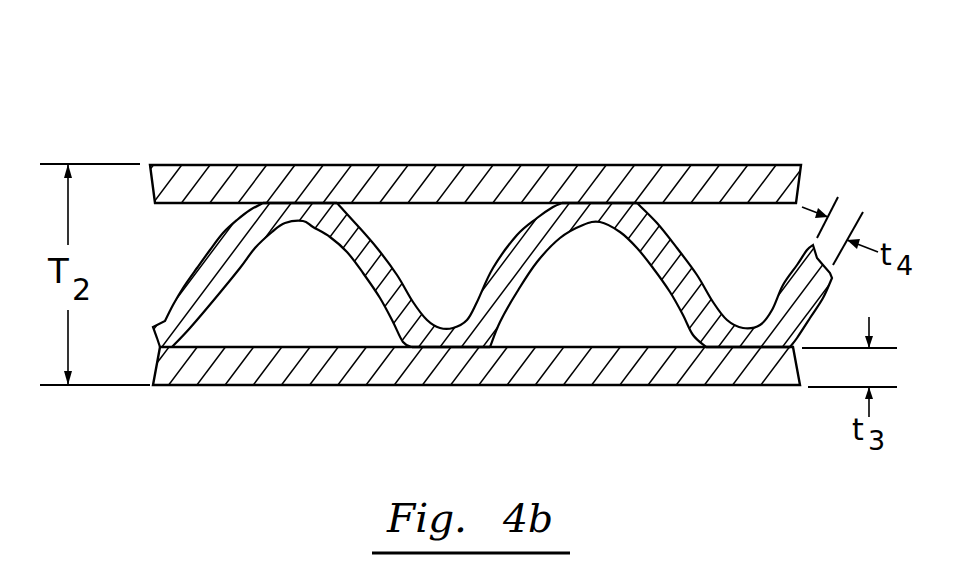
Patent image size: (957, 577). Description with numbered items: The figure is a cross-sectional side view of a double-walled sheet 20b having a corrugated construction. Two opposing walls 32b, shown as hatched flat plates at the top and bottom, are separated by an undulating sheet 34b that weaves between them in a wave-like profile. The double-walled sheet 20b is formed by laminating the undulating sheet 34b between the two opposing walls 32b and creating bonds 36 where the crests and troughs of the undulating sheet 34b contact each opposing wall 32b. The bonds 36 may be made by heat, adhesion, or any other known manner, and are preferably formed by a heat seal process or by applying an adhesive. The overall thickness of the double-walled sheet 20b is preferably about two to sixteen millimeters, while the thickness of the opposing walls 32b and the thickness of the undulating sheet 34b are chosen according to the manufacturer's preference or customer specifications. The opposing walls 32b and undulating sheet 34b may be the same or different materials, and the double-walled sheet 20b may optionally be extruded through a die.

The double-walled sheet 20b is at (499, 228).
The opposing walls 32b is at (511, 178).
The undulating sheet 34b is at (213, 265).
The bonds 36 is at (293, 204).